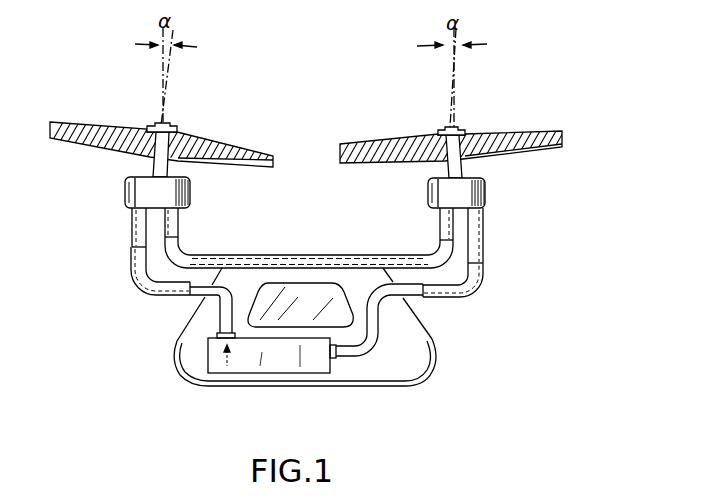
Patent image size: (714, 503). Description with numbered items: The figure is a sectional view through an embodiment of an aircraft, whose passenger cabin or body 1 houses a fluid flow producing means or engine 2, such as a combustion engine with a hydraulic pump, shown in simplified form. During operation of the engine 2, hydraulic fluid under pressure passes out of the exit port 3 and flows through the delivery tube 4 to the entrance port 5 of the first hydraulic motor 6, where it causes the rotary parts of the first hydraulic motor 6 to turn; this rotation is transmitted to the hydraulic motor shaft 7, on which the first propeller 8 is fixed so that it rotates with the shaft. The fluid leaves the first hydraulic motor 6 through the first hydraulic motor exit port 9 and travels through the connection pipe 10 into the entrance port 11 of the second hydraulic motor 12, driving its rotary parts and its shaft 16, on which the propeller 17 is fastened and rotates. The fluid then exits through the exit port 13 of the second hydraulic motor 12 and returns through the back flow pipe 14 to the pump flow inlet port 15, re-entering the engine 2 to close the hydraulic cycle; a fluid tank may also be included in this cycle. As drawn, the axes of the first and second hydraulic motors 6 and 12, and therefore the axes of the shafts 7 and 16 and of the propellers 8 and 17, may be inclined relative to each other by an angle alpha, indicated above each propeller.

The passenger cabin 1 is at (307, 282).
The fluid flow producing means 2 is at (237, 365).
The exit port 3 is at (217, 333).
The delivery tube 4 is at (131, 268).
The entrance port 5 is at (134, 225).
The first hydraulic motor 6 is at (135, 192).
The hydraulic motor shaft 7 is at (156, 164).
The first propeller 8 is at (126, 138).
The first hydraulic motor exit port 9 is at (179, 228).
The connection pipe 10 is at (272, 265).
The entrance port 11 is at (440, 224).
The second hydraulic motor 12 is at (486, 192).
The exit port 13 is at (484, 227).
The back flow pipe 14 is at (484, 276).
The pump flow inlet port 15 is at (337, 362).
The shaft 16 is at (466, 166).
The propeller 17 is at (486, 143).